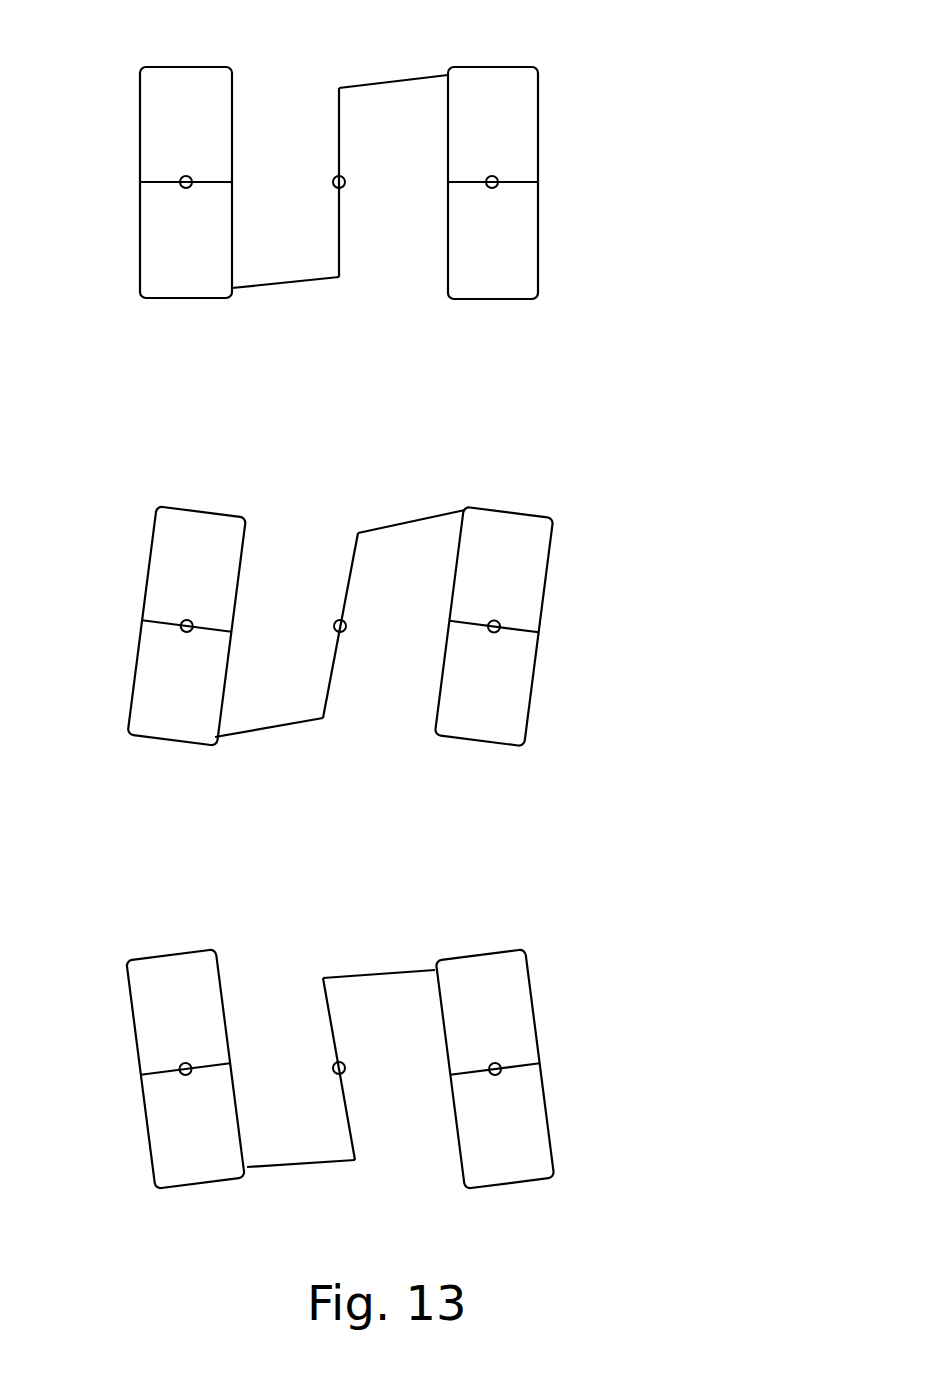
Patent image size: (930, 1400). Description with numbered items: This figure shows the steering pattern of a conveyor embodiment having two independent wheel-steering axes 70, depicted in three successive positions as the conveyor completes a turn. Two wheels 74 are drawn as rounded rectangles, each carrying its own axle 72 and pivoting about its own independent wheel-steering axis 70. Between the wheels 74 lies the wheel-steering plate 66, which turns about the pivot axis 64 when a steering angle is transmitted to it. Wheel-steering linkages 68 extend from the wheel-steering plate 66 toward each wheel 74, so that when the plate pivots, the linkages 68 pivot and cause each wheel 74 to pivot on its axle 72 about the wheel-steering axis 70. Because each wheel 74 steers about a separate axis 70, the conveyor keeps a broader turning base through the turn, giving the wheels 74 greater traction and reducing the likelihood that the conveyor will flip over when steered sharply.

The pivot axis 64 is at (375, 646).
The wheel-steering plate 66 is at (374, 624).
The wheel-steering linkage 68 is at (347, 619).
The wheel-steering axis 70 is at (333, 653).
The axle 72 is at (333, 599).
The wheel 74 is at (334, 628).